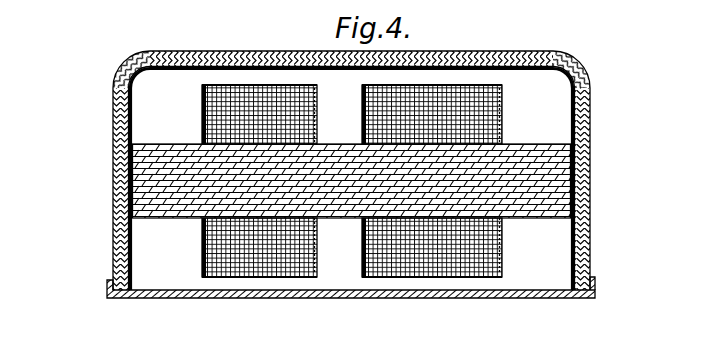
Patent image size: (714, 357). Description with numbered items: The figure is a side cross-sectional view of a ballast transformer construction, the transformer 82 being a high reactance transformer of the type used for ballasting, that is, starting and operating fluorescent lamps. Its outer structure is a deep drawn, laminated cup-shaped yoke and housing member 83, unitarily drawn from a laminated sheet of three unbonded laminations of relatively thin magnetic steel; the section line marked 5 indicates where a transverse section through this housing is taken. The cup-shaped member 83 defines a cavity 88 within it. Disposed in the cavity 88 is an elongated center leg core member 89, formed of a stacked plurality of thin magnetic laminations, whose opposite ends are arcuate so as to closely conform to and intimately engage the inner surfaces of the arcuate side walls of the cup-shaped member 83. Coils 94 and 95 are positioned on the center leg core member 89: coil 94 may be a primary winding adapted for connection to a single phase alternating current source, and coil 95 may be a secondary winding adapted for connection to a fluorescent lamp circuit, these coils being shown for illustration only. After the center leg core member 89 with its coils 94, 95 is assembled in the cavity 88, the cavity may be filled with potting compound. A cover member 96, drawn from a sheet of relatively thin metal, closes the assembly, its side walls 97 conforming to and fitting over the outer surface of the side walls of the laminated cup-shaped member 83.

The transformer 82 is at (491, 52).
The cup-shaped yoke and housing member 83 is at (587, 75).
The center leg core member 89 is at (516, 144).
The cavity 88 is at (178, 248).
The coil 94 is at (270, 266).
The coil 95 is at (450, 262).
The cover member 96 is at (175, 299).
The side walls 97 is at (596, 289).
The section line 5- 5 is at (92, 144).